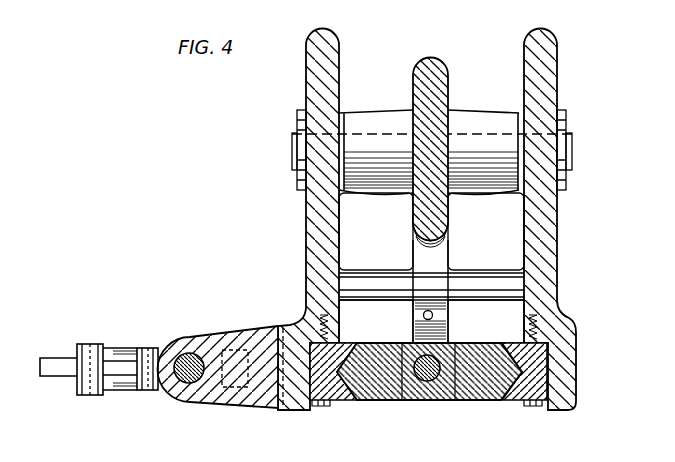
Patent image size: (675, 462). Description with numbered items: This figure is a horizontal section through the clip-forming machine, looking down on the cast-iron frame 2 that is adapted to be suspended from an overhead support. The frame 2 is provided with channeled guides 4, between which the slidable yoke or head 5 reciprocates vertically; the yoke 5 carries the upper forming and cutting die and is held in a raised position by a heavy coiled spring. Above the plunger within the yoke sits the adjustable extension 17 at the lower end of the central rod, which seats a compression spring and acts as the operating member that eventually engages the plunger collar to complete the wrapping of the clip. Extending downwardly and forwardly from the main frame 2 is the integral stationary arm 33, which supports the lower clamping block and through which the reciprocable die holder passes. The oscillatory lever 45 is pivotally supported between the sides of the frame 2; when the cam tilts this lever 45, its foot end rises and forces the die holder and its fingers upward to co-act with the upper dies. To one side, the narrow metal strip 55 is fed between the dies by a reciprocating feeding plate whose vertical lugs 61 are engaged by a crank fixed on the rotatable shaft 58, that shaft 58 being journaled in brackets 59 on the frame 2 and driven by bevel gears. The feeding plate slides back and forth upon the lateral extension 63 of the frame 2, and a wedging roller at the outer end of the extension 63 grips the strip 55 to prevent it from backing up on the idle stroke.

The frame 2 is at (558, 238).
The channeled guides 4 is at (343, 401).
The slidable yoke or head 5 is at (479, 402).
The adjustable extension 17 is at (425, 402).
The stationary arm 33 is at (447, 317).
The oscillatory lever 45 is at (446, 236).
The metal strip 55 is at (57, 364).
The rotatable shaft 58 is at (188, 386).
The brackets 59 is at (210, 337).
The vertical lugs 61 is at (149, 348).
The lateral extension 63 is at (121, 394).